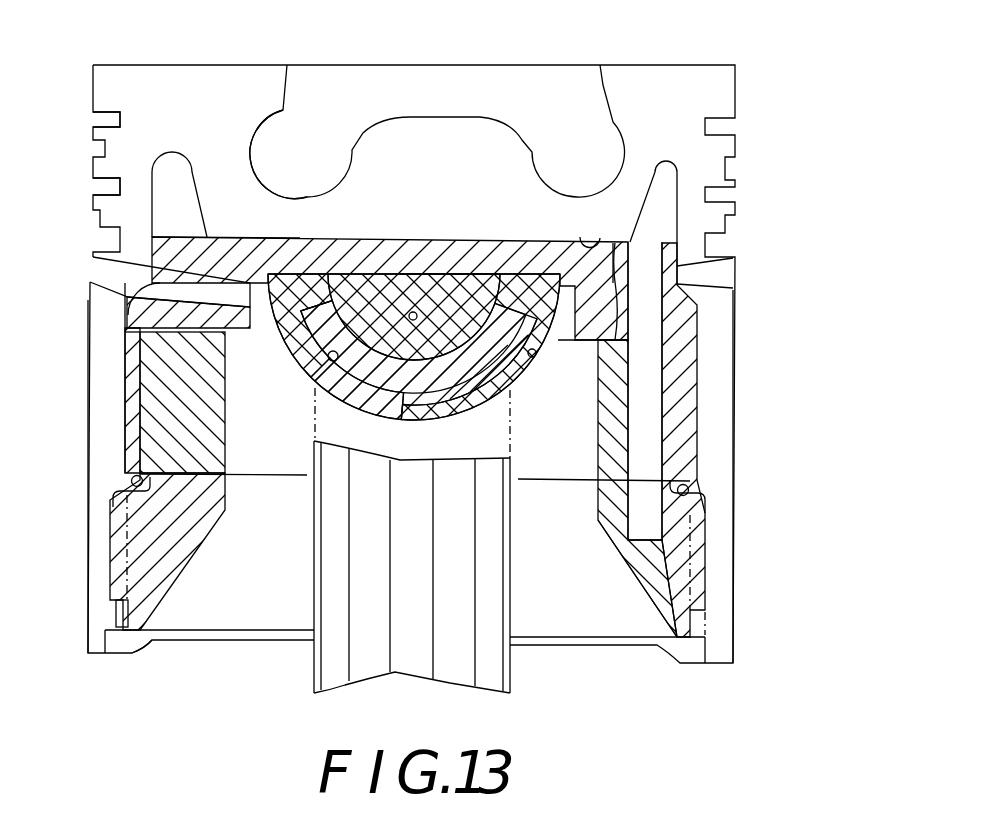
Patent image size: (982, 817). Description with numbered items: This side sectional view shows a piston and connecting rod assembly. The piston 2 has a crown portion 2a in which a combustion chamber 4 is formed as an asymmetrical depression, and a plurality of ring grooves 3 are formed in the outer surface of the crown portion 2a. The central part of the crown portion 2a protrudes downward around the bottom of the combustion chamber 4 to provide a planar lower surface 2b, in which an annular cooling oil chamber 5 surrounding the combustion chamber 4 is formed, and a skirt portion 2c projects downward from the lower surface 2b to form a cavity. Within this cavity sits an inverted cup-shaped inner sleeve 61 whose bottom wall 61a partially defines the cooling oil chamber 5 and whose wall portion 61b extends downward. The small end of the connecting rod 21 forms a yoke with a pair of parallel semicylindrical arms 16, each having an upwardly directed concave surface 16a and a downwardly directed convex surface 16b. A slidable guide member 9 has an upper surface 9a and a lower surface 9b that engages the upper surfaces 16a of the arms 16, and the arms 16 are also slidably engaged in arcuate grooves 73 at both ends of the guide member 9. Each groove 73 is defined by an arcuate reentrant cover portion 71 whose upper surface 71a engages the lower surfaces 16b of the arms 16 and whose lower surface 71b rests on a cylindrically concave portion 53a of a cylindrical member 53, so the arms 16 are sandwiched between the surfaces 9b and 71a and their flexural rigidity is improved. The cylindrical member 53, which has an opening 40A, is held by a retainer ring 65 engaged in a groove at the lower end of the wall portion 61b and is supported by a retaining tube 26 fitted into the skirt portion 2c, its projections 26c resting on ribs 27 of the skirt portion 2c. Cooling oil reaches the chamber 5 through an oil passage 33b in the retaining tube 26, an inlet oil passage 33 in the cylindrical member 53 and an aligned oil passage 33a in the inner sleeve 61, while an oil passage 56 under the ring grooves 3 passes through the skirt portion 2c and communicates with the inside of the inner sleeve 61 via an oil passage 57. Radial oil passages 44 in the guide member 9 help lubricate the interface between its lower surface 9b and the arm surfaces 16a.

The piston 2 is at (195, 58).
The crown portion 2a is at (462, 167).
The lower surface of crown portion 2b is at (604, 240).
The skirt portion 2c is at (720, 409).
The ring grooves 3 is at (117, 182).
The combustion chamber 4 is at (262, 150).
The annular cooling oil chamber 5 is at (181, 201).
The guide member 9 is at (465, 323).
The upper surface of guide member 9a is at (455, 270).
The lower surface of guide member 9b is at (433, 395).
The semicylindrical arms 16 is at (450, 373).
The upper surfaces of arms 16a is at (408, 311).
The lower surfaces of arms 16b is at (318, 349).
The connecting rod 21 is at (413, 665).
The retaining tube 26 is at (170, 565).
The projections of retaining tube 26c is at (120, 557).
The ribs of skirt portion 27 is at (128, 620).
The inlet oil passage 33 is at (647, 455).
The oil passage in inner sleeve 33a is at (647, 316).
The oil passage in retaining tube 33b is at (648, 585).
The opening 40A is at (223, 457).
The oil passages 44 is at (410, 320).
The cylindrical member 53 is at (157, 362).
The cylindrically concave portions 53a is at (533, 358).
The oil passage 56 is at (110, 268).
The oil passage in inner sleeve 57 is at (127, 316).
The inner sleeve 61 is at (385, 230).
The bottom wall of inner sleeve 61a is at (240, 252).
The wall portion of inner sleeve 61b is at (132, 418).
The retainer ring 65 is at (155, 490).
The reentrant cover portion 71 is at (500, 400).
The upper surfaces of cover portions 71a is at (318, 395).
The lower surfaces of cover portions 71b is at (362, 415).
The arcuate grooves 73 is at (510, 287).